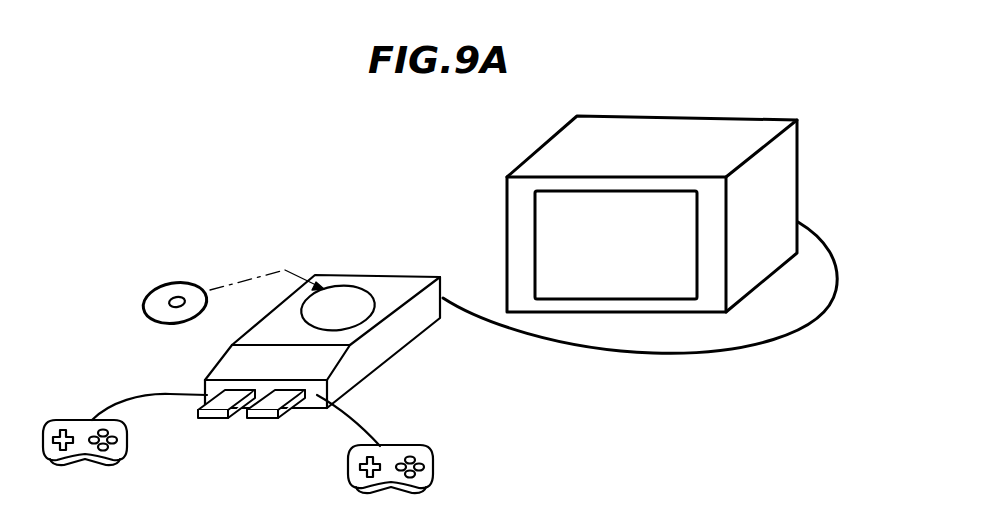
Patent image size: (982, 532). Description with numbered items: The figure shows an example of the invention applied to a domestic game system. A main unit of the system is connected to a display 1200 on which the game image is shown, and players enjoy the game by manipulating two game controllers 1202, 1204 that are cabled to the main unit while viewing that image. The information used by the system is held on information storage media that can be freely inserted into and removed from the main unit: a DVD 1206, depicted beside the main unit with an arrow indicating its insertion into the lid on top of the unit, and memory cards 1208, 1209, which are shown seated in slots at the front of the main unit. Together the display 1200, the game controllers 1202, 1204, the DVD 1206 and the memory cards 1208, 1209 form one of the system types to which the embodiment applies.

The display 1200 is at (550, 225).
The game controller 1202 is at (73, 418).
The game controller 1204 is at (408, 443).
The DVD 1206 is at (180, 282).
The memory card 1208 is at (210, 420).
The memory card 1209 is at (270, 420).